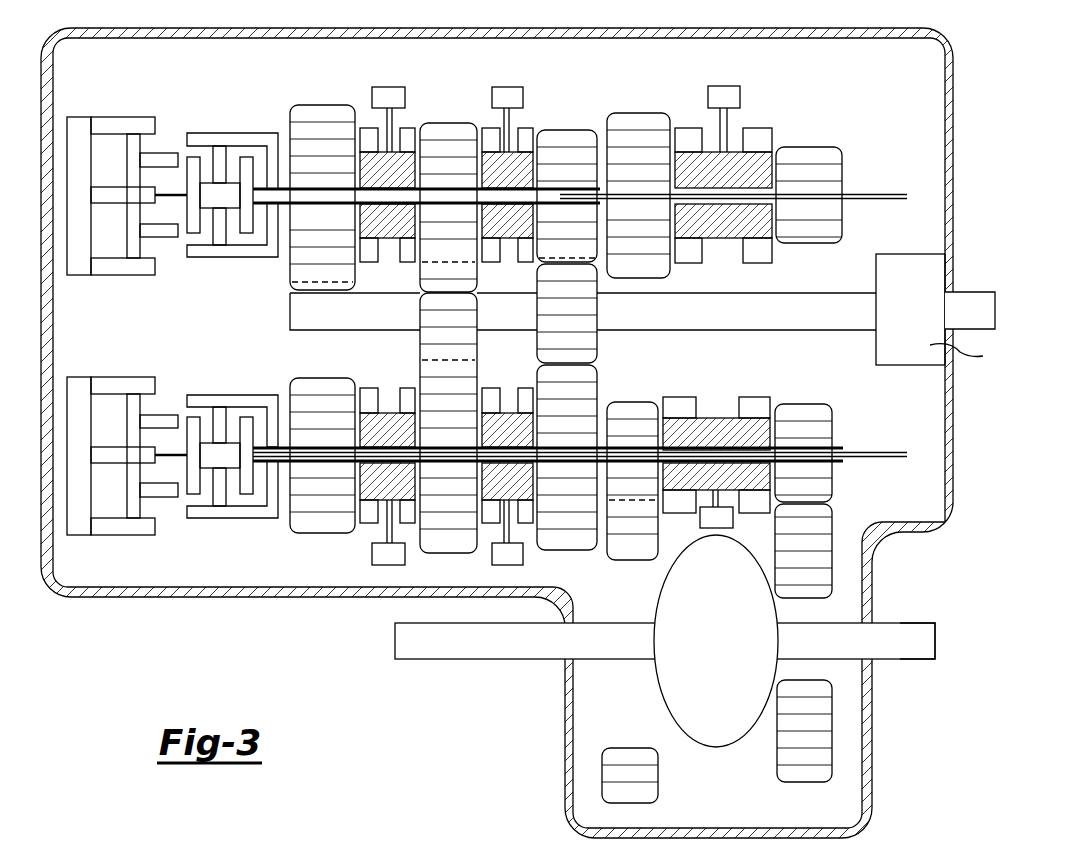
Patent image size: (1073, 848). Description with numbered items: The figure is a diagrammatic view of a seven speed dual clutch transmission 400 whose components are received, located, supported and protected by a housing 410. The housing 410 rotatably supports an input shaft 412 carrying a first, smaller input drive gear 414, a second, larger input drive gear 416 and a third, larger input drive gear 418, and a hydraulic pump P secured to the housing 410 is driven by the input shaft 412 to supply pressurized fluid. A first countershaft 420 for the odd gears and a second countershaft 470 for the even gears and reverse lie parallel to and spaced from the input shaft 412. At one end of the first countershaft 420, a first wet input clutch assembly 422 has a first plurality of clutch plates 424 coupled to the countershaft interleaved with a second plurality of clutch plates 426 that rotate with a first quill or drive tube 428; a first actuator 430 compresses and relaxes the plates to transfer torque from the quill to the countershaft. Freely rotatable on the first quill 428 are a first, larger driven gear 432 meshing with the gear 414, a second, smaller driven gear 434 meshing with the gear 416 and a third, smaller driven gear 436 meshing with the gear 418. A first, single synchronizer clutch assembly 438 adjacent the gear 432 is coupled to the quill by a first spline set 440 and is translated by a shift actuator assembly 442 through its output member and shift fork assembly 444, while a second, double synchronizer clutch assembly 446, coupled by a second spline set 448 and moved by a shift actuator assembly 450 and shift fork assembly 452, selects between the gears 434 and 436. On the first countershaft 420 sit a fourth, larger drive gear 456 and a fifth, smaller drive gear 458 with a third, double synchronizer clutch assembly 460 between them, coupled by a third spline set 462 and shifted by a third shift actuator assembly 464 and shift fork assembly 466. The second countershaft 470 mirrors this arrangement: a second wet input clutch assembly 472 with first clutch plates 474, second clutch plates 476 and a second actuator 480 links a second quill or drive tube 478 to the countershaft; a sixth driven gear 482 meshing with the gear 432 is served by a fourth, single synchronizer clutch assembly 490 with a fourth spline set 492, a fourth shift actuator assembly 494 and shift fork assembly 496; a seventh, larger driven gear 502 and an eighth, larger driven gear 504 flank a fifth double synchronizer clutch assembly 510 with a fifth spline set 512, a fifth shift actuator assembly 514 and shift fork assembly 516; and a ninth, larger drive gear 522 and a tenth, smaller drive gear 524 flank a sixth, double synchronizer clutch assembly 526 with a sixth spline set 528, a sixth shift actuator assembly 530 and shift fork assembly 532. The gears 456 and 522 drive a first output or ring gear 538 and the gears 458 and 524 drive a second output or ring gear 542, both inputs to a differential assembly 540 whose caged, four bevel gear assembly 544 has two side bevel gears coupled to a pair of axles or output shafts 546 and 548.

The seven speed dual clutch transmission 400 is at (554, 433).
The housing 410 is at (204, 598).
The input shaft 412 is at (973, 293).
The hydraulic pump P is at (968, 354).
The first, smaller input drive gear 414 is at (292, 325).
The second, larger input drive gear 416 is at (418, 330).
The third, larger input drive gear 418 is at (600, 330).
The first layshaft or countershaft 420 is at (878, 195).
The first, wet input clutch assembly 422 is at (221, 177).
The first plurality of clutch plates or discs 424 is at (193, 157).
The second plurality of clutch plates or discs 426 is at (218, 232).
The first quill or drive tube 428 is at (548, 210).
The first actuator 430 is at (125, 112).
The first, larger driven gear 432 is at (312, 105).
The second, smaller driven gear 434 is at (437, 125).
The third, smaller driven gear 436 is at (565, 130).
The first, single synchronizer clutch assembly 438 is at (368, 164).
The first interengaging male and female spline set 440 is at (384, 208).
The first shift actuator assembly 442 is at (392, 86).
The output member and shift fork assembly 444 is at (382, 122).
The second, double synchronizer clutch assembly 446 is at (483, 165).
The second interengaging male and female spline set 448 is at (503, 208).
The shift actuator assembly 450 is at (503, 86).
The output member and shift fork assembly 452 is at (502, 122).
The fourth, larger drive gear 456 is at (620, 113).
The fifth, smaller drive gear 458 is at (810, 148).
The third, double synchronizer clutch assembly 460 is at (700, 160).
The third interengaging male and female spline set 462 is at (722, 205).
The third shift actuator assembly 464 is at (722, 85).
The output member and shift fork assembly 466 is at (713, 125).
The second layshaft or countershaft 470 is at (900, 456).
The second, wet input clutch assembly 472 is at (193, 458).
The first plurality of clutch plates or discs 474 is at (193, 494).
The second plurality of clutch plates or discs 476 is at (216, 417).
The second quill or drive tube 478 is at (597, 392).
The second actuator 480 is at (125, 372).
The sixth, driven gear 482 is at (312, 534).
The fourth, single synchronizer clutch assembly 490 is at (368, 387).
The fourth interengaging male and female spline set 492 is at (395, 440).
The fourth shift actuator assembly 494 is at (390, 567).
The output member and shift fork assembly 496 is at (382, 540).
The seventh, larger driven gear 502 is at (440, 554).
The eighth, larger driven gear 504 is at (572, 552).
The fifth double synchronizer clutch assembly 510 is at (511, 462).
The fifth interengaging male and female spline set 512 is at (505, 440).
The fifth shift actuator assembly 514 is at (510, 567).
The output member and shift fork assembly 516 is at (516, 534).
The ninth, larger drive gear 522 is at (648, 402).
The tenth, smaller drive gear 524 is at (832, 428).
The sixth, double synchronizer clutch assembly 526 is at (752, 478).
The sixth interengaging male and female spline set 528 is at (722, 450).
The sixth shift actuator assembly 530 is at (698, 528).
The output member and shift fork assembly 532 is at (728, 500).
The first output or ring gear 538 is at (600, 775).
The differential assembly 540 is at (735, 752).
The second output or ring gear 542 is at (832, 570).
The caged, four bevel gear assembly 544 is at (722, 748).
The axle or output shaft 546 is at (455, 660).
The axle or output shaft 548 is at (910, 660).